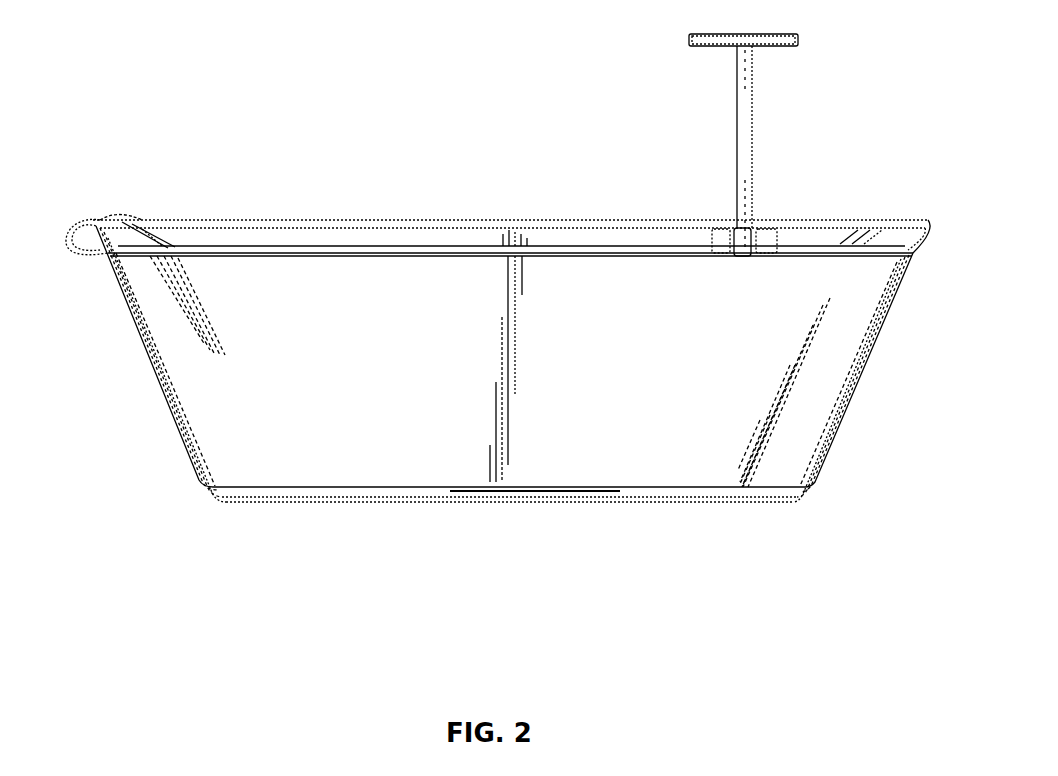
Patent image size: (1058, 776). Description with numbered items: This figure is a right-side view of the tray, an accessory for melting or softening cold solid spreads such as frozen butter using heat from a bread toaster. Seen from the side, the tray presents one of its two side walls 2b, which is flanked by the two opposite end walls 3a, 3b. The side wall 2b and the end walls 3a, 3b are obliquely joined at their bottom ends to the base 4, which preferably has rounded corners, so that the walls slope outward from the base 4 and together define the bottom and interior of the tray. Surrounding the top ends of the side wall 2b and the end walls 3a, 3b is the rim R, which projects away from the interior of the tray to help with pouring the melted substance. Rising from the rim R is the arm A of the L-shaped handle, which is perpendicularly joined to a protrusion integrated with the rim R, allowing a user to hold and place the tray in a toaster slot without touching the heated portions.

The arm A is at (737, 165).
The rim R is at (378, 237).
The side wall 2b is at (546, 356).
The end wall 3a is at (143, 345).
The end wall 3b is at (867, 357).
The base 4 is at (303, 500).